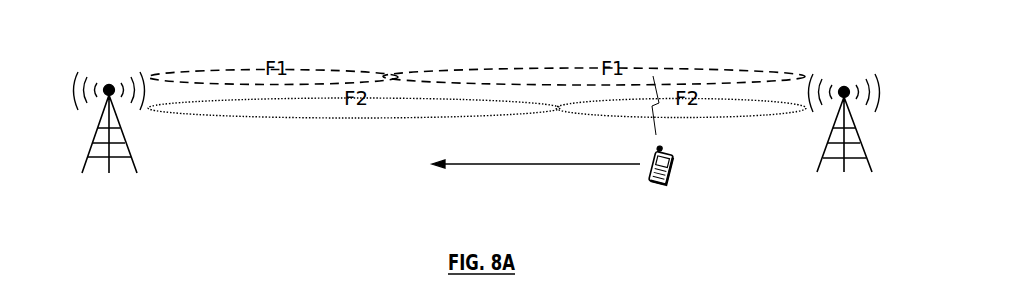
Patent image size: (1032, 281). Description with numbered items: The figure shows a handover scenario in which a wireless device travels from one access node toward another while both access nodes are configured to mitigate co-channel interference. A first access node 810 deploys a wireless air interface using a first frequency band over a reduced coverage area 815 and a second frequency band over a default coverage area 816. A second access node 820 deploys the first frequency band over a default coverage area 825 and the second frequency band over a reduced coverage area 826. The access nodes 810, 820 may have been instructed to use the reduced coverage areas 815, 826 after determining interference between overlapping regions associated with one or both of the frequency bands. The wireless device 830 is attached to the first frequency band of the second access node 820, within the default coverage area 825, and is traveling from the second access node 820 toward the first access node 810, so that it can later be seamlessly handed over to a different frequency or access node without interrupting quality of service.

The first access node 810 is at (89, 155).
The reduced coverage area 815 is at (208, 70).
The default coverage area 816 is at (208, 118).
The second access node 820 is at (862, 150).
The default coverage area 825 is at (747, 71).
The reduced coverage area 826 is at (752, 116).
The wireless device 830 is at (657, 181).